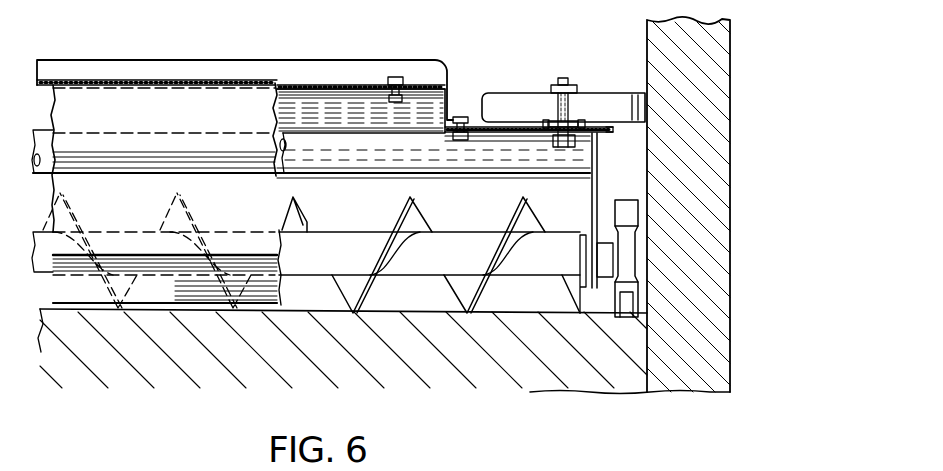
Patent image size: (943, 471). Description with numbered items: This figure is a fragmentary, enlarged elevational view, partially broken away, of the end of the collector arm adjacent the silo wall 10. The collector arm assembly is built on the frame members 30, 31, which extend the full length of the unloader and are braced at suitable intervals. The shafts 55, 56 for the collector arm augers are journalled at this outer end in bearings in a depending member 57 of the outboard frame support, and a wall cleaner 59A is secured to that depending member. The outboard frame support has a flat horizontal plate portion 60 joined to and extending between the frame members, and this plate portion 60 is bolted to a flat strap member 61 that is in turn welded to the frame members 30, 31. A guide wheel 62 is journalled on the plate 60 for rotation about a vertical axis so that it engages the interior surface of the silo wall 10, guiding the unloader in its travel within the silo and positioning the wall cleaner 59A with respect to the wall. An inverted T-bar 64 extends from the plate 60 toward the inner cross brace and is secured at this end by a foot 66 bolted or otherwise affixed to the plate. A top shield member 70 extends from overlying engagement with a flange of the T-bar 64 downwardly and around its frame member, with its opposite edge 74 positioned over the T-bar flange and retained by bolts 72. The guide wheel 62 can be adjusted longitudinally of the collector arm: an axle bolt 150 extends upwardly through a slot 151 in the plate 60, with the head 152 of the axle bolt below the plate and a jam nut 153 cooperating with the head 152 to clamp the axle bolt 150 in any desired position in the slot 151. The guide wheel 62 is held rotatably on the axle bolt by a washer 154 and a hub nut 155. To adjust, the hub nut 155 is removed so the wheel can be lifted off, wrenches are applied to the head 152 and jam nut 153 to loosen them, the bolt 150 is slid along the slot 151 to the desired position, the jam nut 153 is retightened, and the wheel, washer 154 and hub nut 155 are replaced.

The silo wall 10 is at (731, 56).
The frame member 30 is at (370, 166).
The frame member 31 is at (45, 132).
The shaft 55 is at (293, 263).
The shaft 56 is at (465, 238).
The depending member 57 is at (594, 193).
The wall cleaner 59A is at (633, 212).
The flat horizontal plate portion 60 is at (616, 134).
The flat strap member 61 is at (522, 137).
The guide wheel 62 is at (531, 98).
The T-bar 64 is at (293, 64).
The foot 66 is at (449, 108).
The top shield member 70 is at (166, 120).
The bolt 72 is at (398, 77).
The opposite edge 74 is at (339, 84).
The axle bolt 150 is at (562, 78).
The slot 151 is at (583, 127).
The head 152 is at (560, 141).
The jam nut 153 is at (548, 124).
The washer 154 is at (577, 93).
The hub nut 155 is at (572, 86).